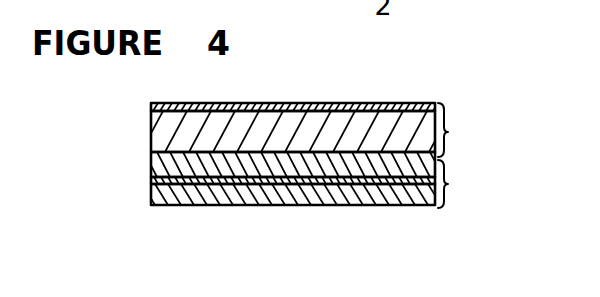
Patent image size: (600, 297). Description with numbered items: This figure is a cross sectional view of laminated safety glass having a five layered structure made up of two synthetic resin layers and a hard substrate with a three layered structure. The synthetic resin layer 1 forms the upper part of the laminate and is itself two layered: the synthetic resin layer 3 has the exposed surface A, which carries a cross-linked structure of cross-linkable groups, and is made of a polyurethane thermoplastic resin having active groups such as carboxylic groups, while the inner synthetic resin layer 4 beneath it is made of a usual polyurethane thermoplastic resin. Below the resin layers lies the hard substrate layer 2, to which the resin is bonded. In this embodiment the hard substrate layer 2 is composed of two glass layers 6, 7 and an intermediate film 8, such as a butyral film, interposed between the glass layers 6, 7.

The synthetic resin layer 1 is at (457, 130).
The hard substrate layer 2 is at (456, 184).
The synthetic resin layer 3 is at (281, 108).
The inner synthetic resin layer 4 is at (322, 150).
The glass layer 6 is at (209, 161).
The glass layer 7 is at (260, 184).
The intermediate film 8 is at (313, 183).
The exposed surface A is at (385, 110).